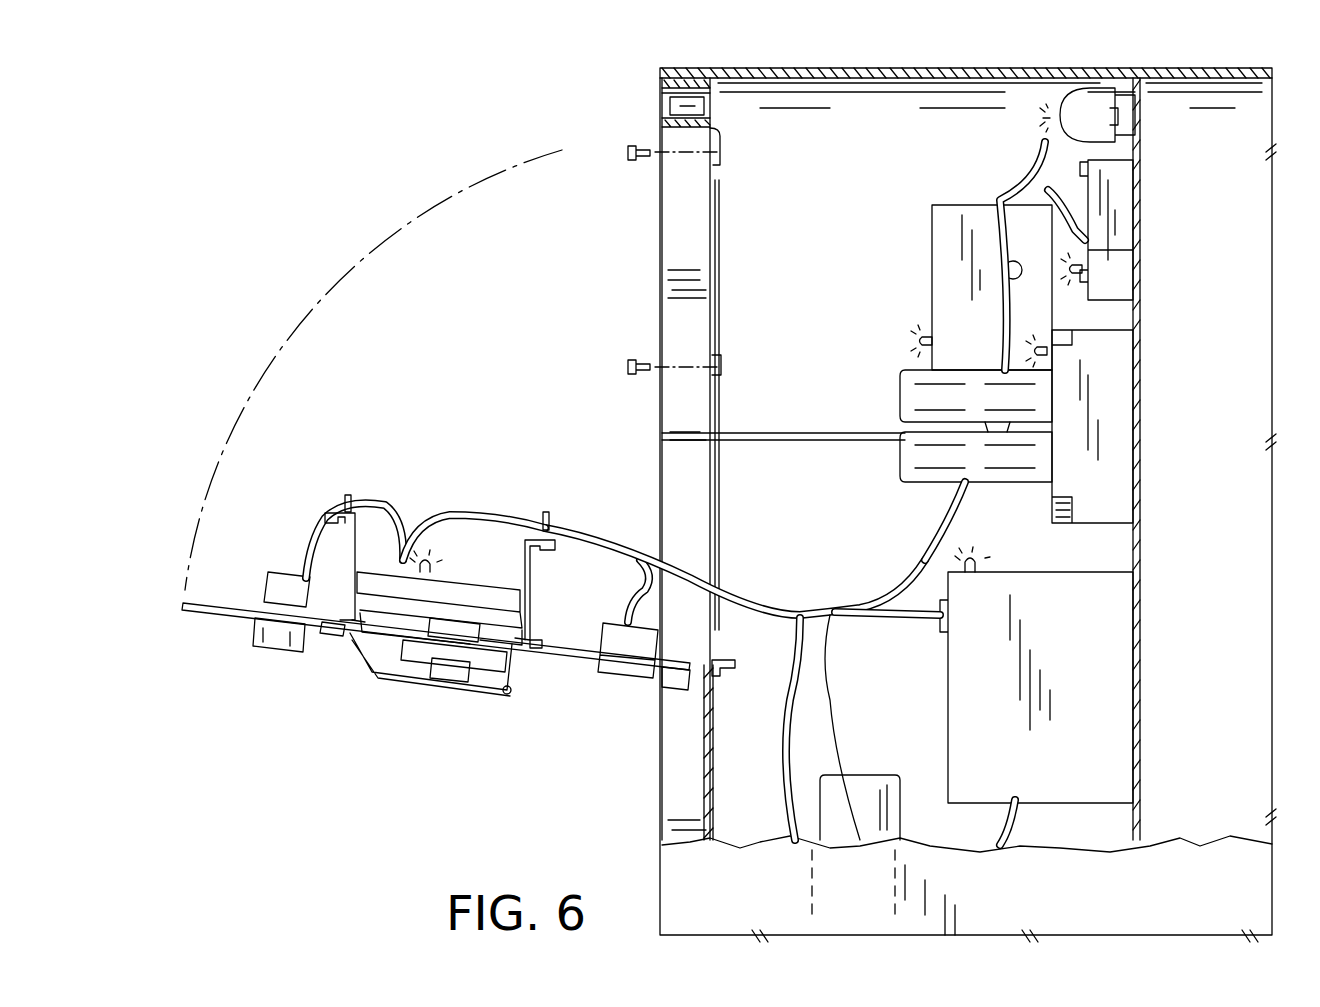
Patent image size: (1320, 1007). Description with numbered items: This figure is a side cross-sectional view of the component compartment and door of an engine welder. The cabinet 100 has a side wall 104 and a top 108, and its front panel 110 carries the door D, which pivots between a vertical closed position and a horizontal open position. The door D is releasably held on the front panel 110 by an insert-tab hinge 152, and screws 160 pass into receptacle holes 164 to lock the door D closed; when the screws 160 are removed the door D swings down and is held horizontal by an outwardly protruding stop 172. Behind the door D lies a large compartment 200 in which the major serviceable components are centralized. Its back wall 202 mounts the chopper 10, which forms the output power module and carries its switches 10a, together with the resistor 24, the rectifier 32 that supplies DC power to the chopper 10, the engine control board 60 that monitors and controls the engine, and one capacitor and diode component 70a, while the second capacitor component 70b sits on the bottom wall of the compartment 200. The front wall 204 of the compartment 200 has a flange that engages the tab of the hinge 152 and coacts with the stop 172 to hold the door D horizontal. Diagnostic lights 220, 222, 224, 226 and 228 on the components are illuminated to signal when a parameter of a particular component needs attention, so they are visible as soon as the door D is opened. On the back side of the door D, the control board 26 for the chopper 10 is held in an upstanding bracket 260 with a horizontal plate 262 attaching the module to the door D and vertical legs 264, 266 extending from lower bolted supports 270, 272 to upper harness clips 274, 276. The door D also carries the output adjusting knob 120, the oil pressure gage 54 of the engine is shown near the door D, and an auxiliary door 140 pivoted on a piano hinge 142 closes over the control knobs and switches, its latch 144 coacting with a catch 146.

The cabinet 100 is at (783, 67).
The side wall 104 is at (700, 868).
The top 108 is at (1005, 68).
The front panel 110 is at (683, 790).
The knob 120 is at (270, 650).
The auxiliary door 140 is at (388, 684).
The piano hinge 142 is at (508, 694).
The latch 144 is at (452, 672).
The catch 146 is at (400, 663).
The hinge 152 is at (725, 678).
The screws 160 is at (625, 160).
The receptacle holes 164 is at (722, 150).
The stop 172 is at (688, 690).
The compartment 200 is at (868, 108).
The back wall 202 is at (1140, 312).
The front wall 204 is at (713, 802).
The diagnostic light 220 is at (1068, 268).
The diagnostic light 222 is at (1032, 350).
The diagnostic light 224 is at (980, 560).
The diagnostic light 226 is at (928, 340).
The diagnostic light 228 is at (425, 562).
The resistor 24 is at (1095, 98).
The control board 26 is at (455, 585).
The upstanding bracket 260 is at (522, 582).
The horizontal plate 262 is at (395, 628).
The vertical leg 264 is at (303, 528).
The vertical leg 266 is at (535, 565).
The lower bolted support 270 is at (537, 642).
The lower bolted support 272 is at (333, 625).
The upper harness clip 274 is at (546, 525).
The upper harness clip 276 is at (350, 495).
The rectifier 32 is at (942, 235).
The oil pressure gage 54 is at (623, 667).
The engine control board 60 is at (1135, 262).
The capacitor and diode component 70a is at (1110, 702).
The capacitor component 70b is at (865, 790).
The output power module 10 is at (1118, 450).
The switches 10a is at (905, 405).
The door D is at (197, 608).